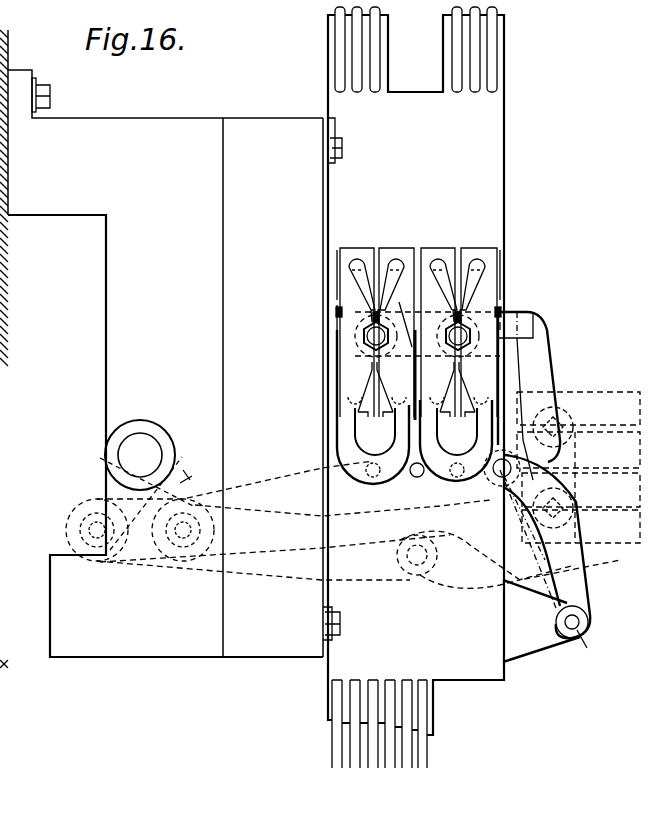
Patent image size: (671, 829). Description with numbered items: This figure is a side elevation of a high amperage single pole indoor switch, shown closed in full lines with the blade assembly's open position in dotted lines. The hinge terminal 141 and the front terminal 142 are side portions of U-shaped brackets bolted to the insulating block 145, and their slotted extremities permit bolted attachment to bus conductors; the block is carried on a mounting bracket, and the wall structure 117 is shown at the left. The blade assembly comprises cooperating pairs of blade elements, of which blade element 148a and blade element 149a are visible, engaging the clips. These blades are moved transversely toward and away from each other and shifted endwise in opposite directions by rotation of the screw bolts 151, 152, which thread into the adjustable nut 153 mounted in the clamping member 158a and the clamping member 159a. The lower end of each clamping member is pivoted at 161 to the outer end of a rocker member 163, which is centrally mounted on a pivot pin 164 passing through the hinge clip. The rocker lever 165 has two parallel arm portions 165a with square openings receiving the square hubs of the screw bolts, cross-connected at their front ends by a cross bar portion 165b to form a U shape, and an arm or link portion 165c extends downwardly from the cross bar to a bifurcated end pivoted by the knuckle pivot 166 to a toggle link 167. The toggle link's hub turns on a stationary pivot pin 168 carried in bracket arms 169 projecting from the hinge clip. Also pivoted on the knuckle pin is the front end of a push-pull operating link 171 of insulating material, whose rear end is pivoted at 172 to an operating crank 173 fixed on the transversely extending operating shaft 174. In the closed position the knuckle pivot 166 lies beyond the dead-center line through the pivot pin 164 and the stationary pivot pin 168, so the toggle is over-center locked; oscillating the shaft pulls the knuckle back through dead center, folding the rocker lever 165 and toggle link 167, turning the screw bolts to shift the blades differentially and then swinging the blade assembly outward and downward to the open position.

The frame part 117 is at (100, 133).
The insulating block 145 is at (260, 128).
The front terminal 142 is at (484, 161).
The hinge terminal 141 is at (340, 442).
The blade element 148a is at (370, 248).
The blade element 149a is at (466, 241).
The clamping member 158a is at (340, 290).
The clamping member 159a is at (475, 284).
The screw bolt 151 is at (372, 336).
The screw bolt 152 is at (466, 322).
The adjustable nut 153 is at (464, 333).
The pivot pin 164 is at (424, 494).
The rocker member 163 is at (404, 482).
The pivotal connection 161 is at (372, 476).
The rocker lever 165 is at (559, 331).
The parallel arm portion 165a is at (357, 326).
The cross bar portion 165b is at (540, 317).
The arm or link portion 165c is at (545, 382).
The knuckle pivot 166 is at (513, 473).
The toggle link 167 is at (568, 556).
The stationary pivot pin 168 is at (580, 623).
The bracket arm 169 is at (536, 651).
The operating shaft 174 is at (128, 455).
The pivotal connection 172 is at (183, 535).
The operating crank 173 is at (156, 499).
The push-pull operating link 171 is at (284, 540).